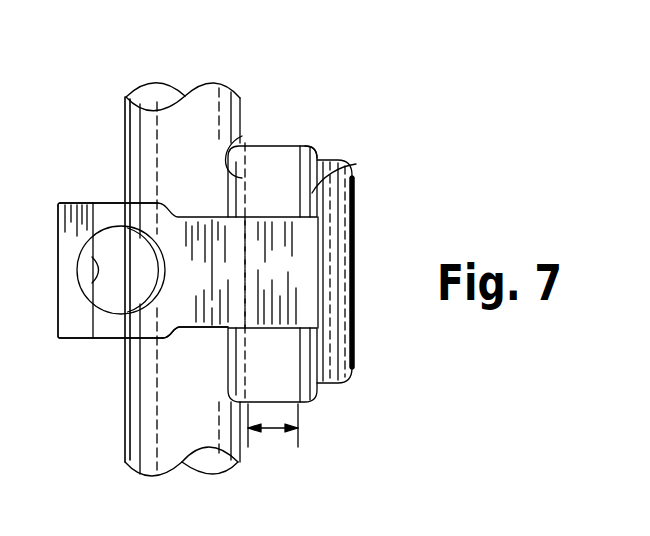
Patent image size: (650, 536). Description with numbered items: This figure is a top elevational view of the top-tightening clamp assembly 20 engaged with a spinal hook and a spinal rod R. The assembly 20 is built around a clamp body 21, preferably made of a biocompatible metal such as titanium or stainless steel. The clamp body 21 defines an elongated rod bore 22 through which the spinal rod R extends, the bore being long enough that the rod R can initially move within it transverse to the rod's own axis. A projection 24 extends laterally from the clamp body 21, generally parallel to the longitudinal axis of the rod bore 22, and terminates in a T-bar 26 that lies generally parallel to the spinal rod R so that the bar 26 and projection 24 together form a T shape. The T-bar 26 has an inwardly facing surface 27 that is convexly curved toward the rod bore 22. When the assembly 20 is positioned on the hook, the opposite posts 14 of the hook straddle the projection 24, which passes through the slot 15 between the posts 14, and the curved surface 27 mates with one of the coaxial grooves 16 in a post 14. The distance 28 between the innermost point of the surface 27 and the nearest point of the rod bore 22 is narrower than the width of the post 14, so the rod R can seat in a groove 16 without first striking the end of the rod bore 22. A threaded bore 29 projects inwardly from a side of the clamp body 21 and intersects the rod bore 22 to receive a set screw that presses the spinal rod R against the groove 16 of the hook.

The spinal rod R is at (243, 100).
The post 14 is at (282, 165).
The slot 15 is at (306, 219).
The groove 16 is at (247, 124).
The top-tightening clamp assembly 20 is at (104, 194).
The clamp body 21 is at (62, 206).
The rod bore 22 is at (245, 276).
The projection 24 is at (190, 320).
The T-bar 26 is at (354, 352).
The inwardly facing surface 27 is at (358, 165).
The distance 28 is at (271, 431).
The threaded bore 29 is at (84, 257).